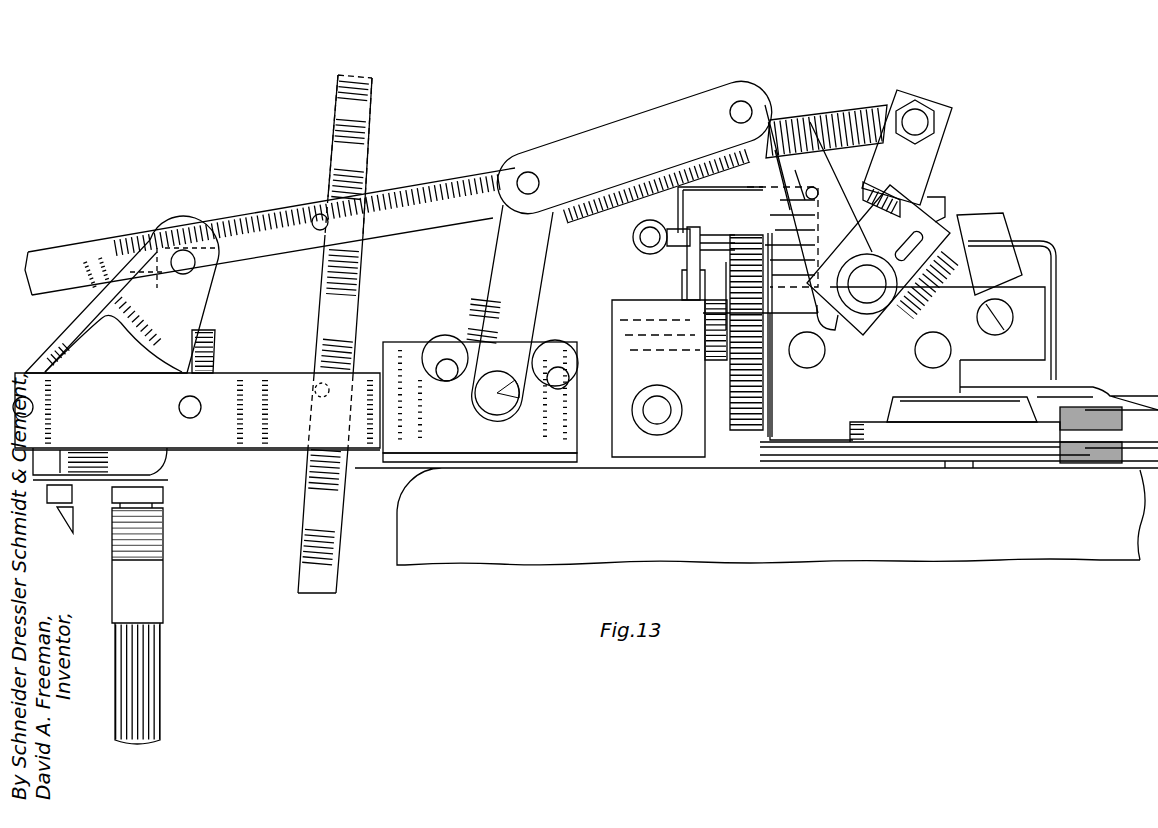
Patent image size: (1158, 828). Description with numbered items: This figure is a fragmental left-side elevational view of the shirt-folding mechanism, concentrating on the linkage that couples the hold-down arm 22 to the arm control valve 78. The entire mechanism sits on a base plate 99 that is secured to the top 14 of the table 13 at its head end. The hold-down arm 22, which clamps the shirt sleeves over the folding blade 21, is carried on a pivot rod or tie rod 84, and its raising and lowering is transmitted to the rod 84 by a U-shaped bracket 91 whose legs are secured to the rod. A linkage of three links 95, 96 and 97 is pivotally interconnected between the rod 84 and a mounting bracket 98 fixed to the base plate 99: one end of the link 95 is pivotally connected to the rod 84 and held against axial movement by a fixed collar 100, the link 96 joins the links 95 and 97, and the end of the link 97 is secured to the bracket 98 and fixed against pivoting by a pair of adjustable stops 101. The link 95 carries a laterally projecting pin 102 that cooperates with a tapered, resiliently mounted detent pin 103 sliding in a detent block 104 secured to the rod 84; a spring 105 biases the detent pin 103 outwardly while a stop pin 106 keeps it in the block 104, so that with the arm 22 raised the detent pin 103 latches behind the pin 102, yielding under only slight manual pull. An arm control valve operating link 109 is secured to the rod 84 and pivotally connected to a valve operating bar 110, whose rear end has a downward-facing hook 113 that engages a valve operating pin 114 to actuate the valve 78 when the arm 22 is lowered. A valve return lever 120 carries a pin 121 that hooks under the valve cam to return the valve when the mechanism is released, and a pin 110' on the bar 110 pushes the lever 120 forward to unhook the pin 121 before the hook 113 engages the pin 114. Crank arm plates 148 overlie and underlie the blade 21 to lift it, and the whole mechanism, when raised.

The table 13 is at (396, 519).
The top of the table 14 is at (972, 466).
The folding blade 21 is at (1010, 452).
The hold-down arm 22 is at (1052, 251).
The arm control valve 78 is at (212, 360).
The pivot rod 84 is at (858, 295).
The U-shaped bracket 91 is at (1002, 222).
The link 95 is at (778, 132).
The link 96 is at (650, 124).
The link 97 is at (528, 246).
The mounting bracket 98 is at (497, 447).
The base plate 99 is at (596, 466).
The fixed collar 100 is at (870, 308).
The stops 101 is at (445, 336).
The laterally projecting pin 102 is at (804, 195).
The detent pin 103 is at (937, 201).
The detent block 104 is at (910, 186).
The spring 105 is at (925, 256).
The stop pin 106 is at (932, 230).
The arm control valve operating link 109 is at (946, 110).
The valve operating bar 110 is at (456, 200).
The pin 110' is at (303, 202).
The hook 113 is at (122, 294).
The valve operating pin 114 is at (184, 250).
The valve return lever 120 is at (340, 100).
The pin 121 is at (308, 370).
The crank arm plates 148 is at (1048, 453).